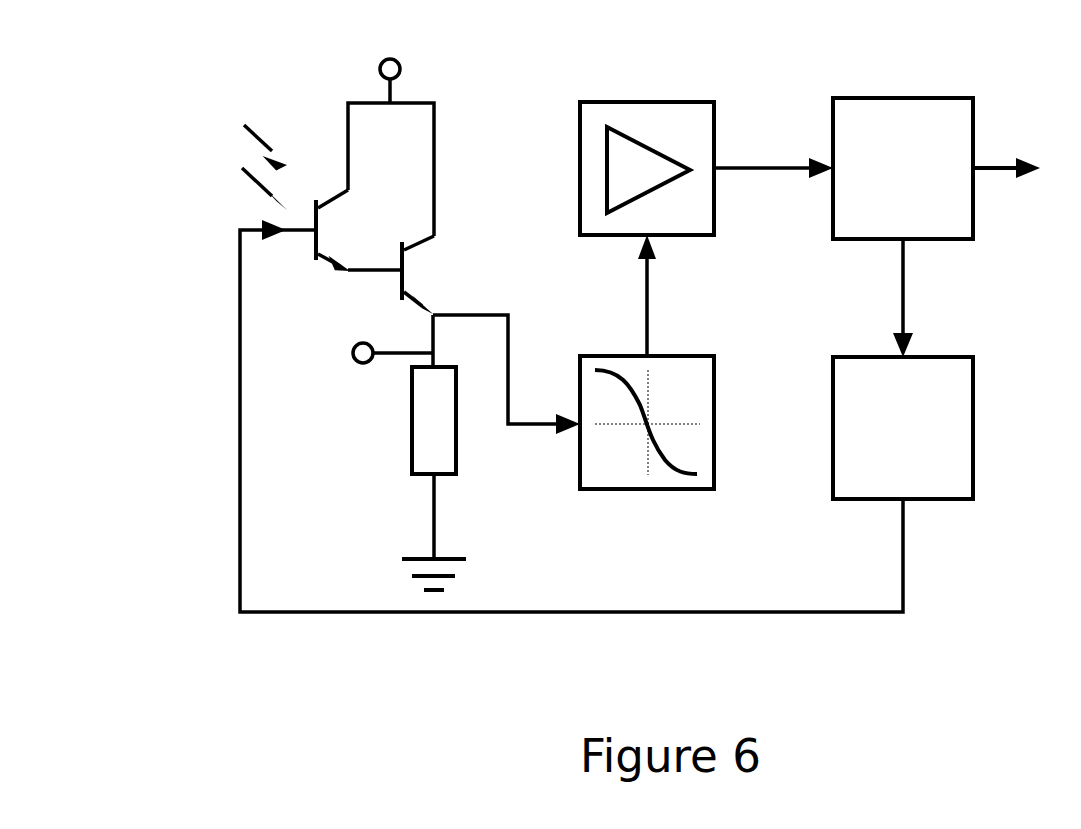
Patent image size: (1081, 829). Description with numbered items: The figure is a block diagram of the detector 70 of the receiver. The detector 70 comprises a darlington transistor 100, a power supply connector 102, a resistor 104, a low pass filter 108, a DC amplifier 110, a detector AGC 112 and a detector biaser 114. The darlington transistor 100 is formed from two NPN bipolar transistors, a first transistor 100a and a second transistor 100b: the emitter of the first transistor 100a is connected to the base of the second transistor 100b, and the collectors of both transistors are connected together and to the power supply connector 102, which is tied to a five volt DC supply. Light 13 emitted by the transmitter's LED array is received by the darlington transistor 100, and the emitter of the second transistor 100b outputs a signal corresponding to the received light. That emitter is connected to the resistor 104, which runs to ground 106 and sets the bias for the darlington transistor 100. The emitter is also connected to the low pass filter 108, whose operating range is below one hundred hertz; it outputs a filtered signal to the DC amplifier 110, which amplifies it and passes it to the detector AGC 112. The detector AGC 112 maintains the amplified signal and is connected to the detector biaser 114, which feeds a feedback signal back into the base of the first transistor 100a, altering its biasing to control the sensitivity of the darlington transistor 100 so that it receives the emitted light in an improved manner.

The light 13 is at (247, 167).
The detector 70 is at (143, 737).
The darlington transistor 100 is at (428, 268).
The first transistor 100a is at (324, 224).
The second transistor 100b is at (413, 270).
The power supply connector 102 is at (390, 58).
The resistor 104 is at (402, 419).
The ground 106 is at (430, 593).
The low pass filter 108 is at (570, 462).
The DC amplifier 110 is at (650, 100).
The detector AGC 112 is at (903, 96).
The detector biaser 114 is at (975, 430).